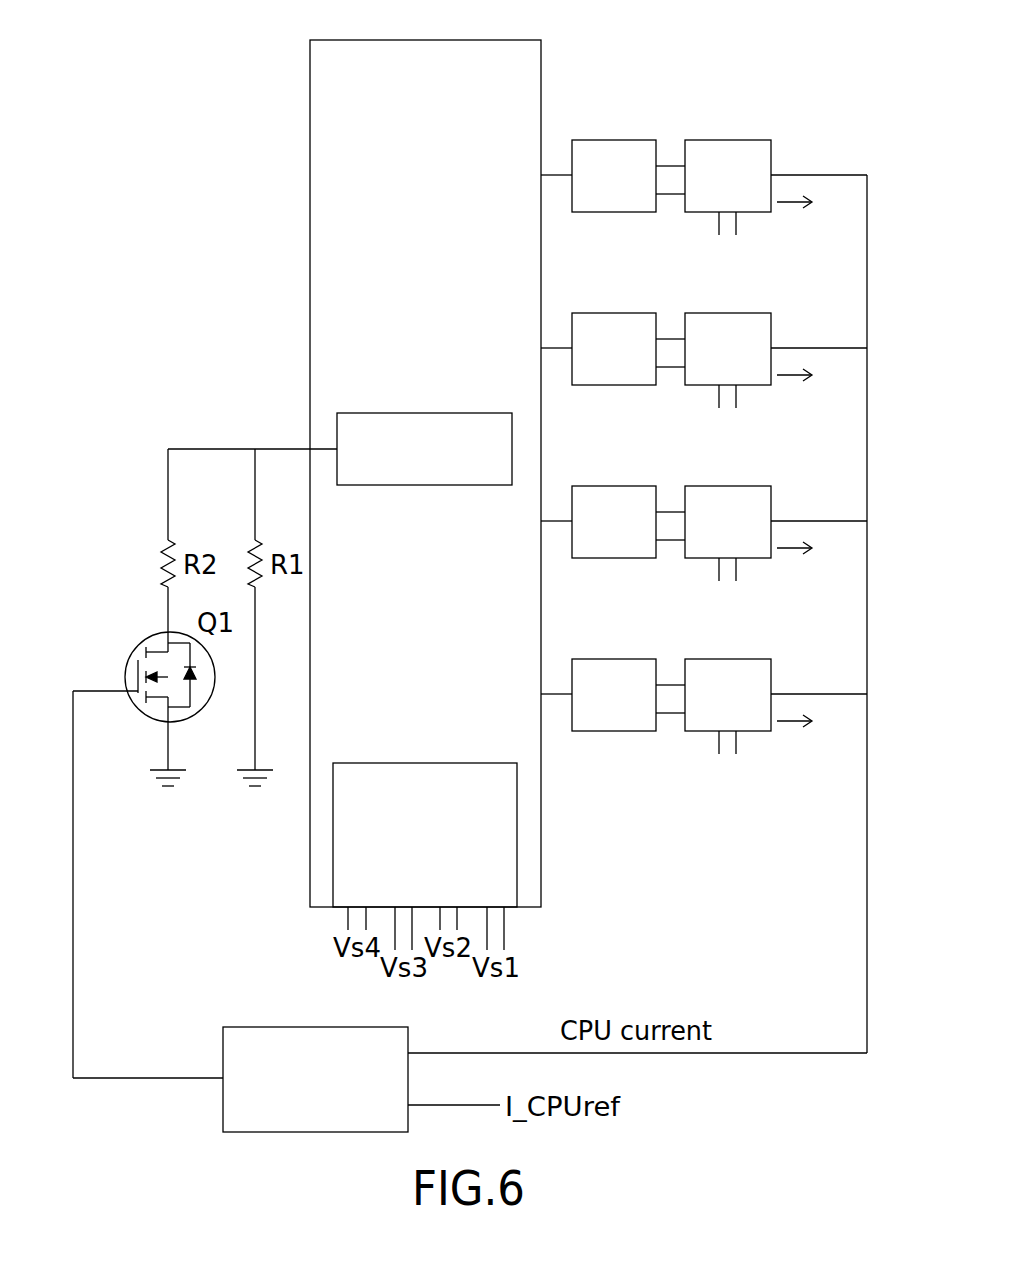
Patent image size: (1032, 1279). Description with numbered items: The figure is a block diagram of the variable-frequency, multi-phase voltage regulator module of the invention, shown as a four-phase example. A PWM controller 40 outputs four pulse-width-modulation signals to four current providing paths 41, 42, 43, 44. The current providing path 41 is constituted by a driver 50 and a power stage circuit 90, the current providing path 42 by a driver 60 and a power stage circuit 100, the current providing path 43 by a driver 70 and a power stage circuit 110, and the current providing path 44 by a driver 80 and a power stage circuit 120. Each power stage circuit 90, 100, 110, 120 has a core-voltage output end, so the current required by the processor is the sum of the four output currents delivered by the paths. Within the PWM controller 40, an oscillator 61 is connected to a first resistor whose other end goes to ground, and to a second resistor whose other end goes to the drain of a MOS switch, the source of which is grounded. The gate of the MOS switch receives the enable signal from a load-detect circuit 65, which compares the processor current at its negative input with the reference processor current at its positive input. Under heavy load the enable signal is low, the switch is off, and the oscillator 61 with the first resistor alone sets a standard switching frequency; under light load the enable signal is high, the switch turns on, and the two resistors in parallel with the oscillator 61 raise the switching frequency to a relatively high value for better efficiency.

The PWM controller 40 is at (490, 48).
The current providing path 41 is at (573, 102).
The current providing path 42 is at (573, 275).
The current providing path 43 is at (573, 448).
The current providing path 44 is at (573, 621).
The driver 50 is at (604, 152).
The driver 60 is at (604, 325).
The driver 70 is at (604, 498).
The driver 80 is at (604, 671).
The power stage circuit 90 is at (717, 152).
The power stage circuit 100 is at (717, 325).
The power stage circuit 110 is at (717, 498).
The power stage circuit 120 is at (717, 671).
The oscillator 61 is at (462, 425).
The load-detect circuit 65 is at (332, 1035).